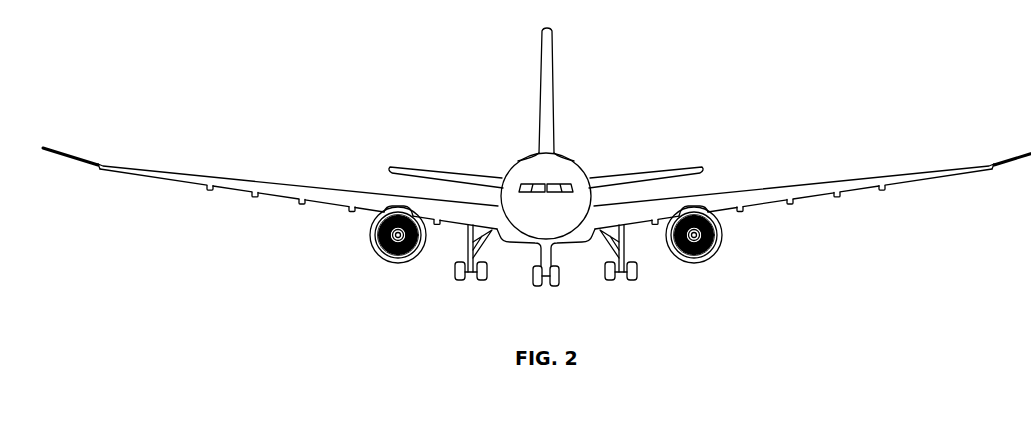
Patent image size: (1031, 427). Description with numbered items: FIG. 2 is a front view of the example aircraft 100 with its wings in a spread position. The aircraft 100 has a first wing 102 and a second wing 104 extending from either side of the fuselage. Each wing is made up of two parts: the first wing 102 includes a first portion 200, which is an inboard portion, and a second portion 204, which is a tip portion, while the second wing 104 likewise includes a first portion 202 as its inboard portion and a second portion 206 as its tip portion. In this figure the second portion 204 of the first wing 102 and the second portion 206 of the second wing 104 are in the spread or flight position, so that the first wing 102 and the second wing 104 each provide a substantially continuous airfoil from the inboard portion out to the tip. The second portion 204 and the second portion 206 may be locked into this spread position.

The aircraft 100 is at (477, 128).
The first wing 102 is at (760, 189).
The second wing 104 is at (328, 188).
The first portion 200 is at (733, 198).
The first portion 202 is at (278, 185).
The second portion 204 is at (993, 163).
The second portion 206 is at (82, 160).